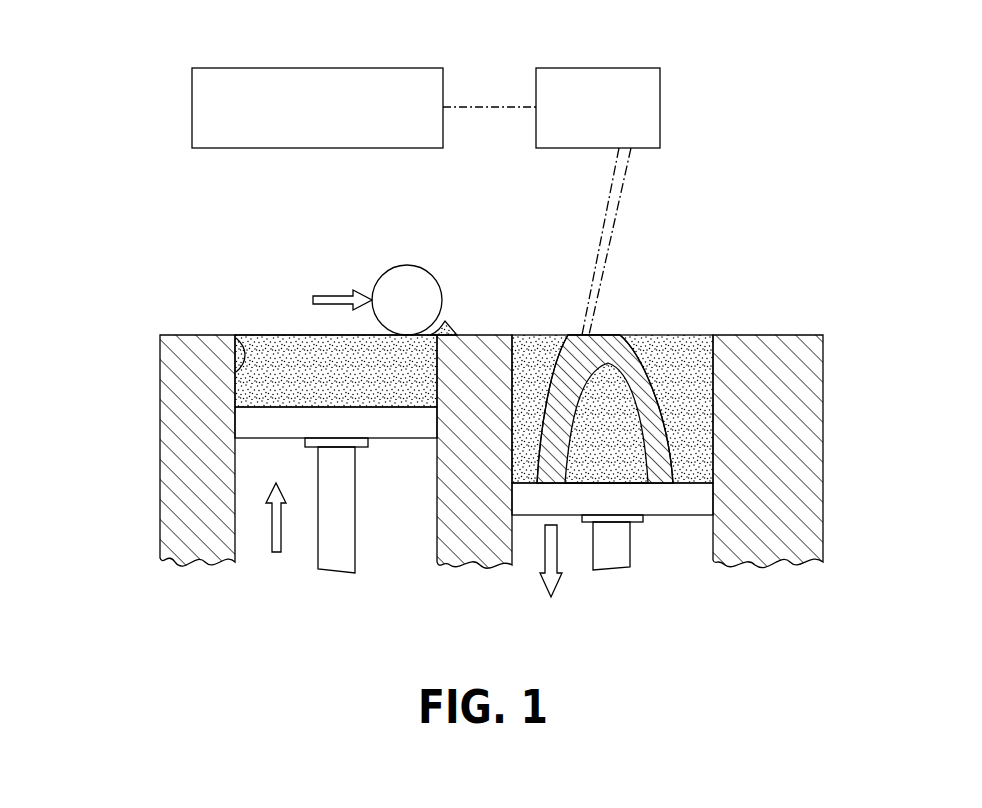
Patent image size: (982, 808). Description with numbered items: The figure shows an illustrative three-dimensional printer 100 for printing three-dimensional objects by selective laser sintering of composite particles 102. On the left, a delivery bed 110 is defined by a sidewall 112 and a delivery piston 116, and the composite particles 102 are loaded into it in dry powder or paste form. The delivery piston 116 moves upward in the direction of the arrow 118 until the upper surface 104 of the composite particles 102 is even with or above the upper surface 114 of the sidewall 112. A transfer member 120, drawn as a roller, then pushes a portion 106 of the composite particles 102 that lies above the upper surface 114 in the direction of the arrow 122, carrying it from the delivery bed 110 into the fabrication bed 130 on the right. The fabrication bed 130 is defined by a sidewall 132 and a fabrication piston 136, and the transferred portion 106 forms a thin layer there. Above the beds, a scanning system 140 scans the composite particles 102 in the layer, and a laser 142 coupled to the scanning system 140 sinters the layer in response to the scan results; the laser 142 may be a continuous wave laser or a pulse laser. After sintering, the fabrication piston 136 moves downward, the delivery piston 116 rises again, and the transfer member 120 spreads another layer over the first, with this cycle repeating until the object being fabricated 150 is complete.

The 3D printer 100 is at (140, 95).
The composite particles 102 is at (353, 386).
The upper surface of the composite particles 104 is at (286, 333).
The portion of the composite particles 106 is at (446, 328).
The delivery bed 110 is at (151, 195).
The sidewall 112 is at (246, 335).
The upper surface of the sidewall 114 is at (197, 335).
The delivery piston 116 is at (388, 440).
The arrow 118 is at (275, 553).
The transfer member 120 is at (400, 265).
The arrow 122 is at (331, 294).
The fabrication bed 130 is at (539, 334).
The sidewall 132 is at (696, 335).
The fabrication piston 136 is at (669, 525).
The scanning system 140 is at (598, 67).
The laser 142 is at (316, 67).
The object being fabricated 150 is at (621, 337).